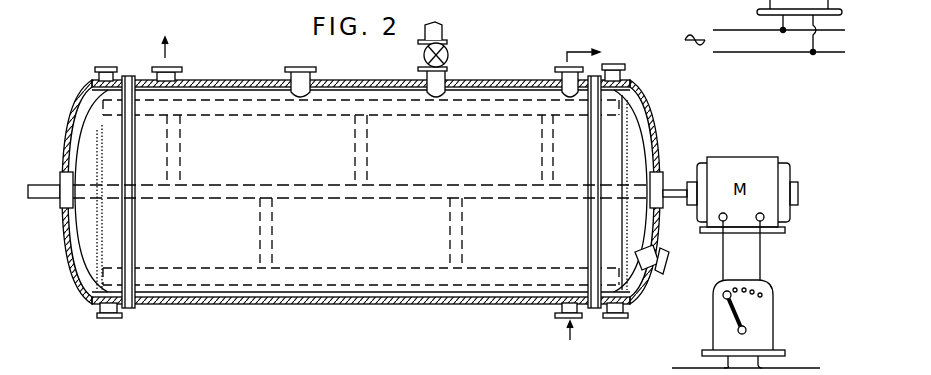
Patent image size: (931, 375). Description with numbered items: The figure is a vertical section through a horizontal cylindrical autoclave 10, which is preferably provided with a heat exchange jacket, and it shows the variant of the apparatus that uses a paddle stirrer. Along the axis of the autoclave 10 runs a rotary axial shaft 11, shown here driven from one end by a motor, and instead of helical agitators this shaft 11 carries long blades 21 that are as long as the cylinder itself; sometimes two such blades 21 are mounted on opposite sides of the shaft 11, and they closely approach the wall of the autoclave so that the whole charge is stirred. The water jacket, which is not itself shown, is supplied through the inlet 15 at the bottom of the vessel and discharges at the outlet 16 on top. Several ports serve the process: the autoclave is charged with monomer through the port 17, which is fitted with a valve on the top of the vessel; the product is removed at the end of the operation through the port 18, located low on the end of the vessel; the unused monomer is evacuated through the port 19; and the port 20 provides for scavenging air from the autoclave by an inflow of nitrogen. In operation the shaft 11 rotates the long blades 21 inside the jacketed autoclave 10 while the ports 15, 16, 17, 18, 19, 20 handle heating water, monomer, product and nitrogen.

The cylindrical autoclave 10 is at (448, 277).
The rotary axial shaft 11 is at (416, 190).
The inlet 15 is at (556, 310).
The discharge 16 is at (152, 70).
The port 17 is at (448, 70).
The port 18 is at (650, 278).
The port 19 is at (292, 77).
The port 20 is at (560, 70).
The long blades 21 is at (277, 113).